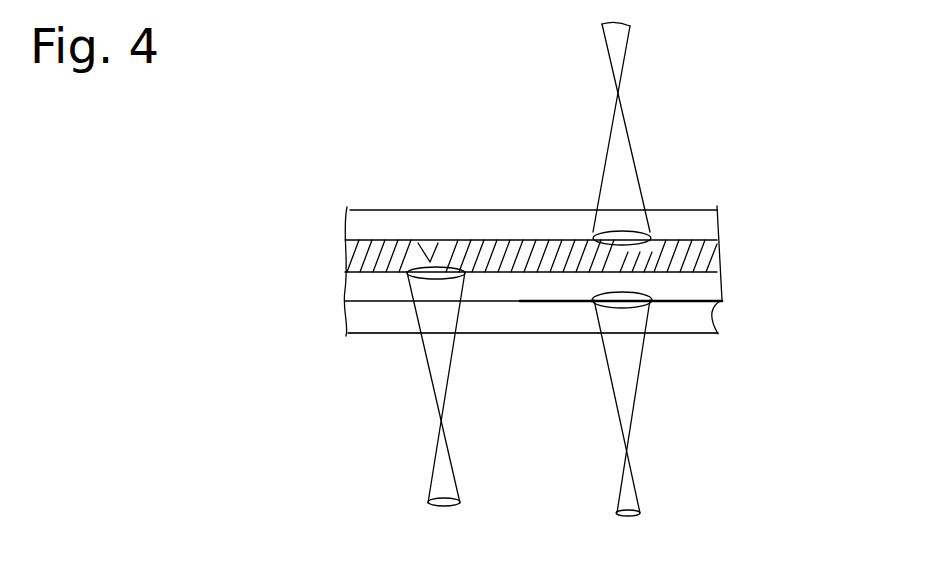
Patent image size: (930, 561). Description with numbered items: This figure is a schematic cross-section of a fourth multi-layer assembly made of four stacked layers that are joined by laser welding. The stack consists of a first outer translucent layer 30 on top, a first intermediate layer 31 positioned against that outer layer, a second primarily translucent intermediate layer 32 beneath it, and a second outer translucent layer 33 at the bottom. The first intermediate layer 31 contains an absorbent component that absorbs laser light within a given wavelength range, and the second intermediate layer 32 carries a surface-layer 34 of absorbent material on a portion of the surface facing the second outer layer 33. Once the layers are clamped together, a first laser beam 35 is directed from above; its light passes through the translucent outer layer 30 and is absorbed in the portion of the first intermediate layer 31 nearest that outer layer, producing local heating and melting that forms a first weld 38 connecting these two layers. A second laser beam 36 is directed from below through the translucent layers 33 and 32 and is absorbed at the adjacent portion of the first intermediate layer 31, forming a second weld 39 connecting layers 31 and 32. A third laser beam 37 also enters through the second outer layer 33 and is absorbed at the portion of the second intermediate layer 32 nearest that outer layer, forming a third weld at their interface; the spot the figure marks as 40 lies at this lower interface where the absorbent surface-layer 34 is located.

The first outer translucent layer 30 is at (340, 232).
The first intermediate layer 31 is at (340, 262).
The second primarily translucent intermediate layer 32 is at (340, 297).
The second outer translucent layer 33 is at (340, 322).
The surface-layer 34 is at (722, 300).
The first laser beam 35 is at (617, 52).
The second laser beam 36 is at (440, 482).
The third laser beam 37 is at (633, 484).
The first weld 38 is at (640, 247).
The second weld 39 is at (422, 243).
The focus spot on reflective layer 40 is at (635, 293).